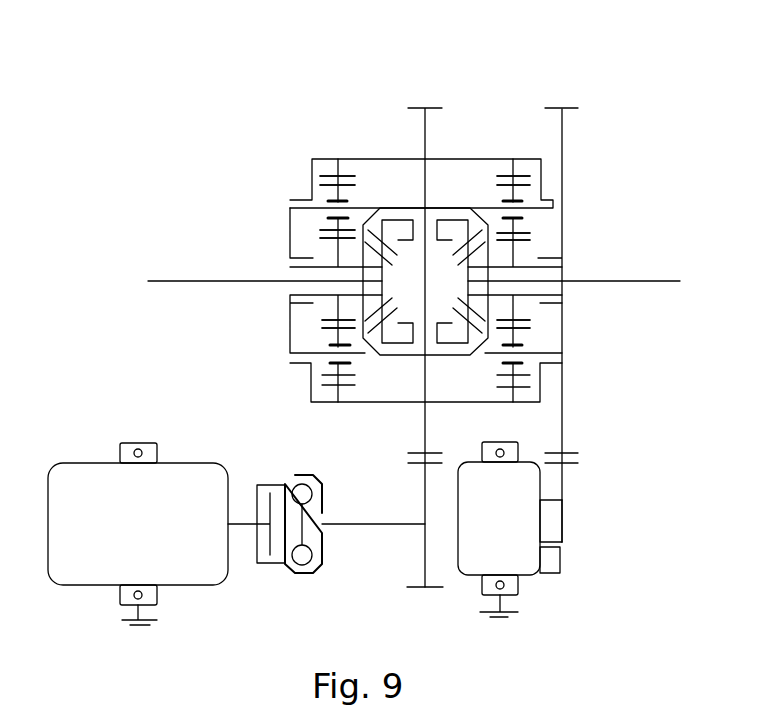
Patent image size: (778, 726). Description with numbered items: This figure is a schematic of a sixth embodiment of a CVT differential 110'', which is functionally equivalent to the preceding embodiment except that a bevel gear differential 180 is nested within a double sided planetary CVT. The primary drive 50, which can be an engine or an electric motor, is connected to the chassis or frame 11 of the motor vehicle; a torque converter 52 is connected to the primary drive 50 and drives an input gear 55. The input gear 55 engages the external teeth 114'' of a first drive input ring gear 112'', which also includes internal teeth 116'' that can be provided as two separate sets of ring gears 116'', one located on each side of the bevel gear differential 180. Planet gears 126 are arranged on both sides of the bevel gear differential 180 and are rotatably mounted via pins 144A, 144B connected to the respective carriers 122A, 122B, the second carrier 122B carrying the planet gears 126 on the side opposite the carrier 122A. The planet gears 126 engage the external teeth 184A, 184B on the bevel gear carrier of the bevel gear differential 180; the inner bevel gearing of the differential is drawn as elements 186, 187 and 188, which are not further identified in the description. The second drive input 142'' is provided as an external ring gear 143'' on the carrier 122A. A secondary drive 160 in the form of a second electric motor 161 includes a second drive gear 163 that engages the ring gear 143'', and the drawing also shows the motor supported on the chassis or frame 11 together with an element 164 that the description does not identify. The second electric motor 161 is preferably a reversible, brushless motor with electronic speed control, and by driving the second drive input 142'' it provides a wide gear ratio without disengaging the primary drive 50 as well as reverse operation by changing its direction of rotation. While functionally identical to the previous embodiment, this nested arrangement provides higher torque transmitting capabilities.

The CVT differential 110'' is at (427, 227).
The external ring gear 143'' is at (582, 66).
The second drive input 142'' is at (614, 325).
The pin 144B is at (302, 207).
The pin 144A is at (548, 203).
The external teeth 184B is at (347, 243).
The external teeth 184A is at (525, 244).
The second carrier 122B is at (290, 322).
The carrier 122A is at (562, 336).
The internal teeth 116'' is at (426, 382).
The planet gears 126 is at (346, 219).
The bevel gear differential 180 is at (387, 206).
The shaft 187 is at (436, 232).
The carrier 188 is at (384, 264).
The gear 186 is at (450, 238).
The first drive input ring gear 112'' is at (374, 437).
The input gear 55 is at (424, 560).
The external teeth 114'' is at (317, 511).
The torque converter 52 is at (285, 568).
The primary drive 50 is at (55, 583).
The second electric motor 161 is at (532, 463).
The secondary drive 160 is at (541, 485).
The second drive gear 163 is at (563, 512).
The bearing / support 164 is at (558, 562).
The chassis or frame 11 is at (140, 627).